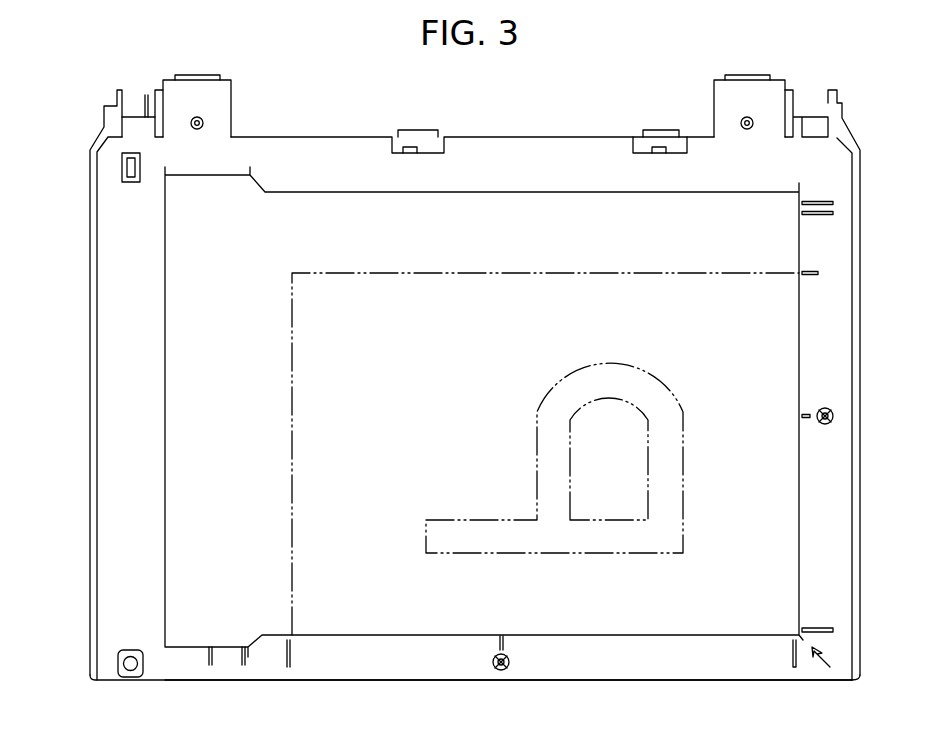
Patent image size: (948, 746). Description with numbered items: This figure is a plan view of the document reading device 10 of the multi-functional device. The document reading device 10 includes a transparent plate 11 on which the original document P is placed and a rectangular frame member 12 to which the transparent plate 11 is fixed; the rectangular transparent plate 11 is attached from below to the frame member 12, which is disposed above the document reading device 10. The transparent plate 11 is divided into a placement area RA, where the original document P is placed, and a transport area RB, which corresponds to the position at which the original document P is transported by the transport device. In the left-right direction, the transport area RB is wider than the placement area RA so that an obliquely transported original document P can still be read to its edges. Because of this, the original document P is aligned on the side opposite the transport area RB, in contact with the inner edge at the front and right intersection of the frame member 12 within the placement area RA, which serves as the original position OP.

The document reading device 10 is at (838, 335).
The transparent plate 11 is at (210, 460).
The frame member 12 is at (570, 670).
The placement area RA is at (283, 547).
The transport area RB is at (205, 332).
The original position OP is at (802, 632).
The original document P is at (713, 610).